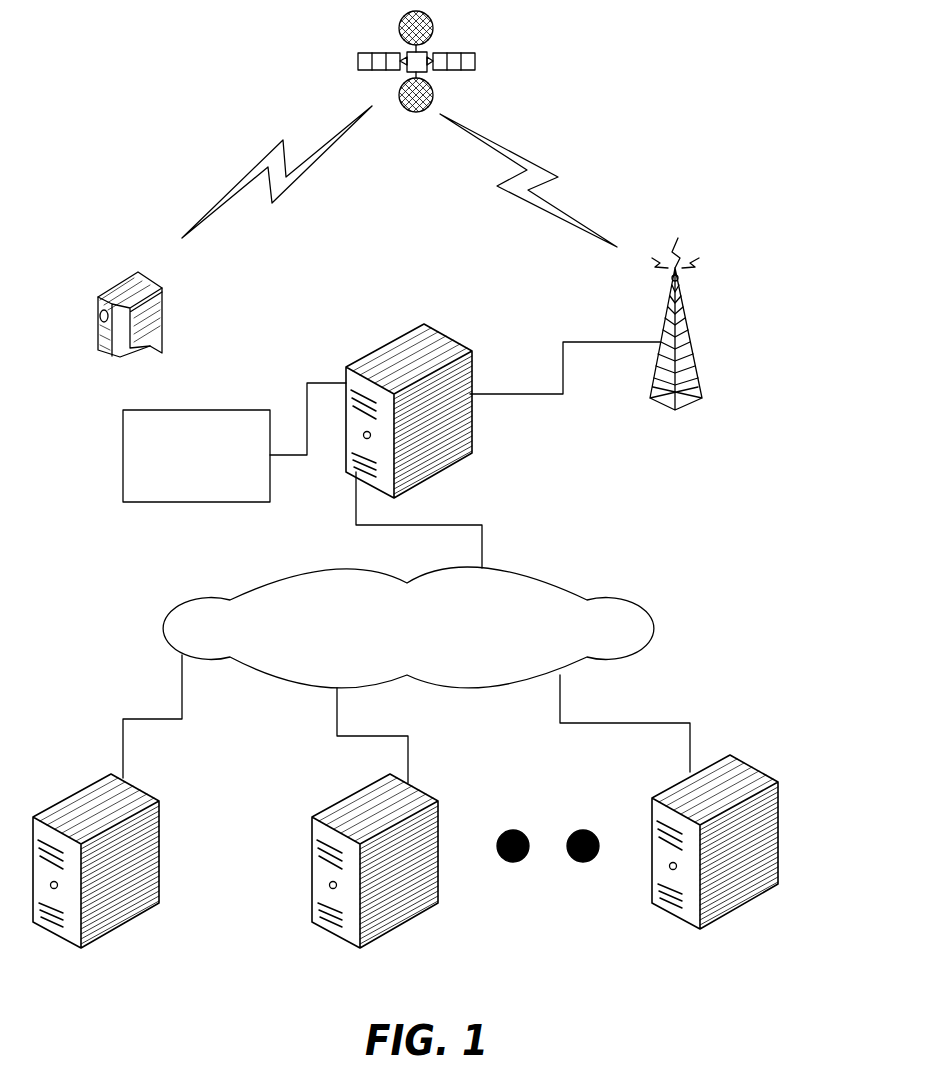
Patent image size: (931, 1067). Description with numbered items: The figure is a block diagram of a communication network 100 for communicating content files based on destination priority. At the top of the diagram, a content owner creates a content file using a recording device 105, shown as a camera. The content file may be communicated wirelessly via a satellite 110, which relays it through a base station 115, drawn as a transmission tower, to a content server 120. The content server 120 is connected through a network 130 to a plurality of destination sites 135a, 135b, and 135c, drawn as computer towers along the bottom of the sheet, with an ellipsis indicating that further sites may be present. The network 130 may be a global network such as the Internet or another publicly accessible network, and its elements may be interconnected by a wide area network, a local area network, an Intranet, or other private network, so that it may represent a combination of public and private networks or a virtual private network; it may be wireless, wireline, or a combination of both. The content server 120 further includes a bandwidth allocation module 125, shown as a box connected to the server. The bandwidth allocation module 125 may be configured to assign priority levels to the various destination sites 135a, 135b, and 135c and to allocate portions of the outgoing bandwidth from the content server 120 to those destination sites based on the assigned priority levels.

The communication network 100 is at (220, 88).
The recording device 105 is at (165, 322).
The satellite 110 is at (475, 62).
The base station 115 is at (695, 367).
The content server 120 is at (422, 323).
The bandwidth allocation module 125 is at (176, 494).
The network 130 is at (430, 657).
The destination site 135a is at (160, 802).
The destination site 135b is at (437, 800).
The destination site 135c is at (778, 782).